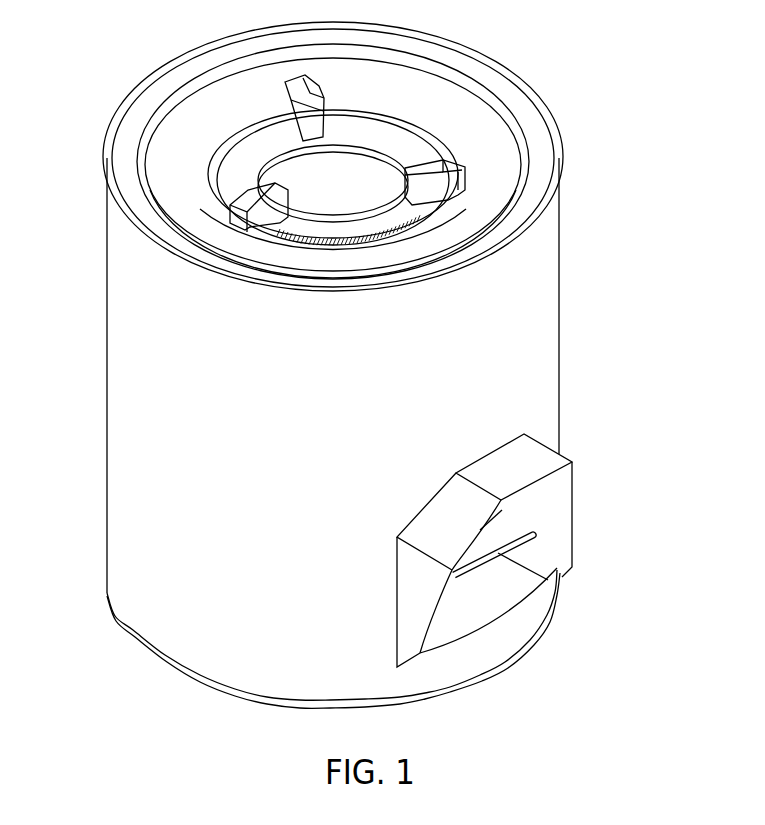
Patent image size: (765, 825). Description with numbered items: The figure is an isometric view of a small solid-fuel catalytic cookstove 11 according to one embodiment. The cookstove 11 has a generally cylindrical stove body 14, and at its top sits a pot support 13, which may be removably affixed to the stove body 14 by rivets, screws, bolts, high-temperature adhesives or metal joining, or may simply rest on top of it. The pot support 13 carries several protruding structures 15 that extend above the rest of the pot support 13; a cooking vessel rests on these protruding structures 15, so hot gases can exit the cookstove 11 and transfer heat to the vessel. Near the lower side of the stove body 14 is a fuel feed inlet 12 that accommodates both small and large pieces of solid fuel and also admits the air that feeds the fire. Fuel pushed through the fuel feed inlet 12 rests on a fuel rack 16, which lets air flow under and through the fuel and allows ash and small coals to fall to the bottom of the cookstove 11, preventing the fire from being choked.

The catalytic cookstove 11 is at (348, 484).
The fuel feed inlet 12 is at (573, 493).
The pot support 13 is at (538, 150).
The stove body 14 is at (560, 355).
The protruding structures 15 is at (233, 212).
The fuel rack 16 is at (497, 553).